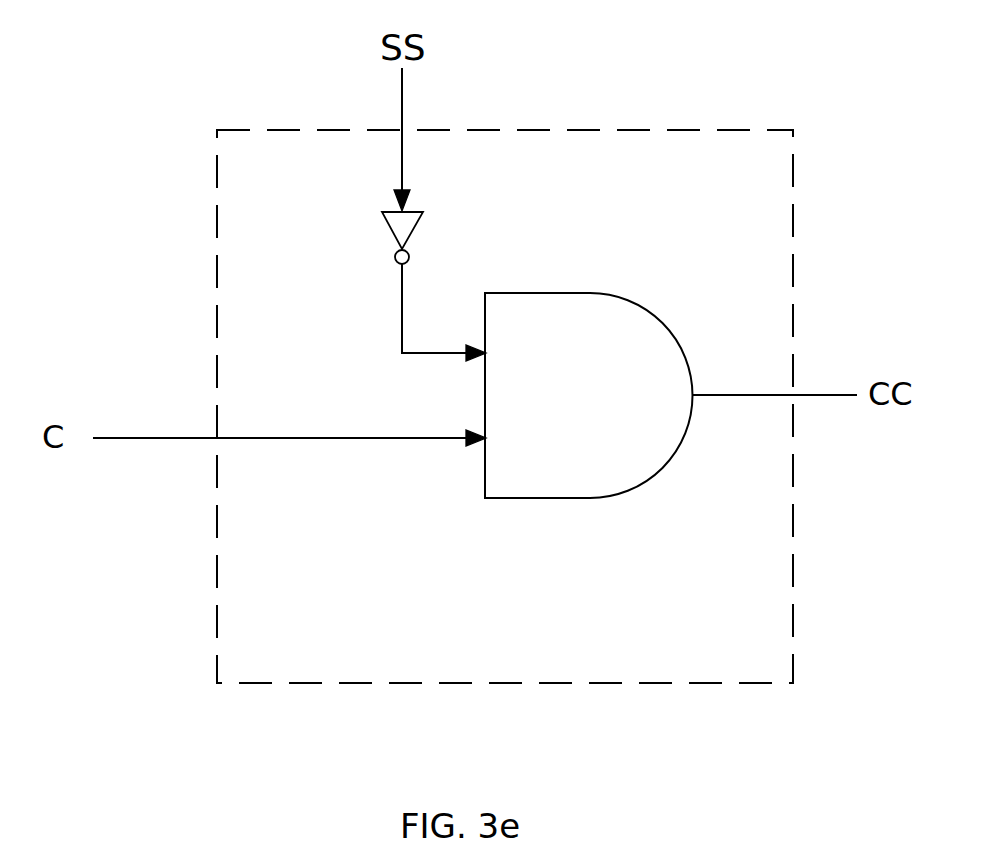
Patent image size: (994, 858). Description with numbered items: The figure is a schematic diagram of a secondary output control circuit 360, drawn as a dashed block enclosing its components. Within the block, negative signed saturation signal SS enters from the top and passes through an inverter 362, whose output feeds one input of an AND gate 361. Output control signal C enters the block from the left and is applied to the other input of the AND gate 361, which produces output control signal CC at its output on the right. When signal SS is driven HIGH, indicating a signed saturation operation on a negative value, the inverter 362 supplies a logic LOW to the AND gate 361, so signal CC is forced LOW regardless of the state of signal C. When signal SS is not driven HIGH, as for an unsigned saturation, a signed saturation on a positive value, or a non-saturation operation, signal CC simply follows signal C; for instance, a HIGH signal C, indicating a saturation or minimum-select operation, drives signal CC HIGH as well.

The secondary output control circuit 360 is at (258, 130).
The AND gate 361 is at (618, 412).
The inverter 362 is at (413, 210).